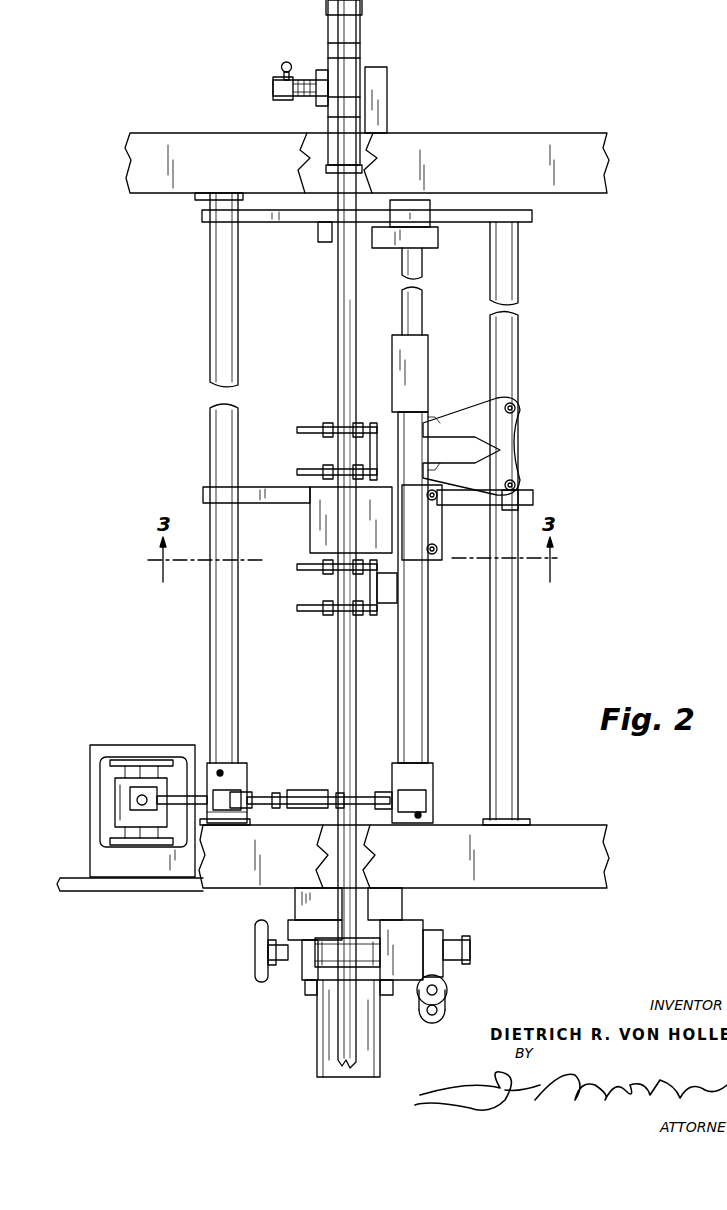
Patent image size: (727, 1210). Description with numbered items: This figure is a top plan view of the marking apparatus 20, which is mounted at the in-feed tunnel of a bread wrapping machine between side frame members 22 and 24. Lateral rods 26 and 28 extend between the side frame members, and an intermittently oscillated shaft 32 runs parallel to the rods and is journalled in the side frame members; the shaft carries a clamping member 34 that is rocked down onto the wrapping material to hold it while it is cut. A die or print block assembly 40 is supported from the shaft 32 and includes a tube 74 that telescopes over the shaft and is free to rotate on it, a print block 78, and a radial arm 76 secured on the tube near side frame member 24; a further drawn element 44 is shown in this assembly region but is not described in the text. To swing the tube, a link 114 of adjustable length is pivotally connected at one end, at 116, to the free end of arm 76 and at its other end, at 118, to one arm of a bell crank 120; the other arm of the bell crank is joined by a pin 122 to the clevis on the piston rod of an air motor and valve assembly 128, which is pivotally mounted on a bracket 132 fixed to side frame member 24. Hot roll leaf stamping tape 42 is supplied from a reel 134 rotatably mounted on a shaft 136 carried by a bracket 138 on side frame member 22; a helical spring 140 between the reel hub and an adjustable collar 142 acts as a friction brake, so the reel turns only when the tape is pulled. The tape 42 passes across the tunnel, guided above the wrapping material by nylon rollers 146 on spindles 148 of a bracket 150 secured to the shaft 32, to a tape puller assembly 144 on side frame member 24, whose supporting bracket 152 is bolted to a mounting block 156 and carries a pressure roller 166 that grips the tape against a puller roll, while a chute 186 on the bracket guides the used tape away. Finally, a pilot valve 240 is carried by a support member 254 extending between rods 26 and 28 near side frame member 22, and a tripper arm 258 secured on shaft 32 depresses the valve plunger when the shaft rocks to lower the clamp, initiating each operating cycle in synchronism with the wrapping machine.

The marking apparatus 20 is at (295, 382).
The side frame member 22 is at (468, 135).
The side frame member 24 is at (542, 885).
The lateral rod 26 is at (235, 672).
The lateral rod 28 is at (498, 608).
The intermittently oscillated shaft 32 is at (412, 300).
The clamping member 34 is at (443, 433).
The die or print block assembly 40 is at (301, 534).
The hot roll leaf stamping tape 42 is at (335, 258).
The cross bar 44 is at (298, 494).
The tube 74 is at (415, 660).
The radial arm 76 is at (410, 798).
The print block 78 is at (313, 548).
The link 114 is at (310, 793).
The pivotal connection 116 is at (388, 787).
The pivotal connection 118 is at (232, 812).
The bell crank 120 is at (203, 762).
The pin 122 is at (167, 758).
The air motor and valve assembly 128 is at (110, 797).
The bracket 132 is at (100, 858).
The reel 134 is at (358, 43).
The shaft 136 is at (303, 100).
The bracket 138 is at (380, 67).
The helical spring 140 is at (320, 70).
The adjustable collar 142 is at (275, 85).
The tape puller assembly 144 is at (280, 1004).
The nylon rollers 146 is at (333, 423).
The spindles 148 is at (308, 430).
The bracket 150 is at (425, 385).
The supporting bracket 152 is at (405, 927).
The mounting block 156 is at (310, 902).
The pressure roller 166 is at (322, 1000).
The chute 186 is at (380, 1023).
The pilot valve 240 is at (327, 235).
The support member 254 is at (308, 222).
The tripper arm 258 is at (436, 237).